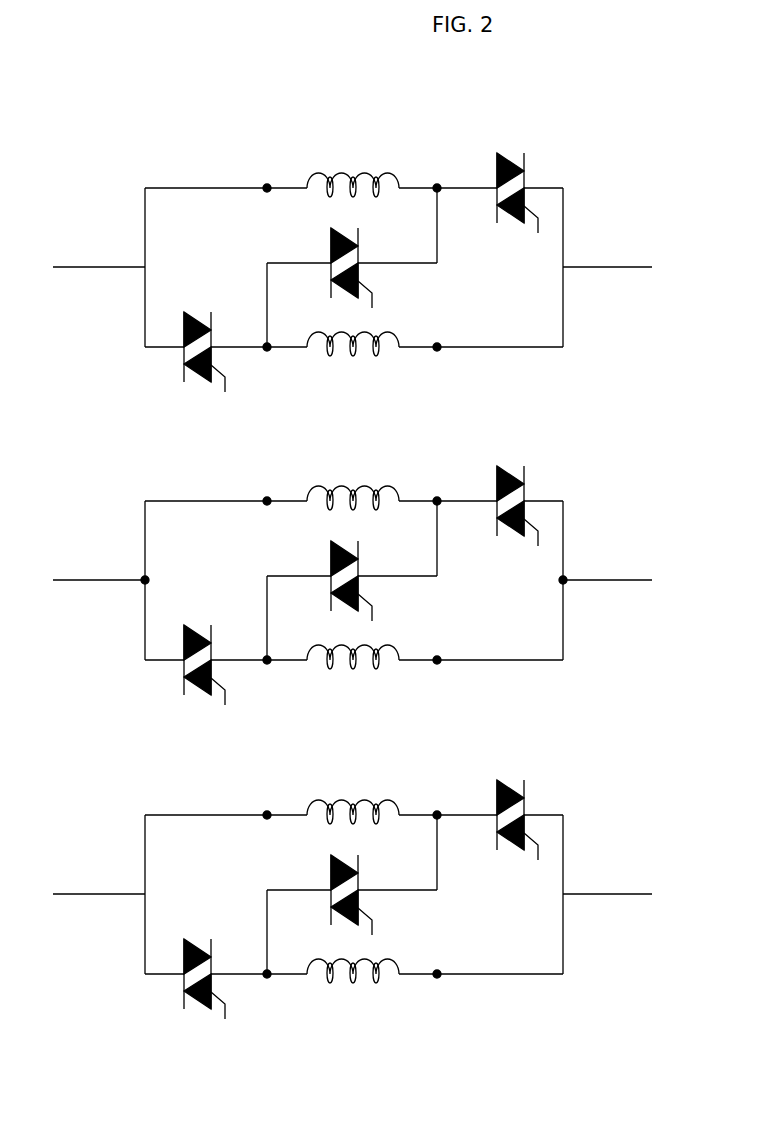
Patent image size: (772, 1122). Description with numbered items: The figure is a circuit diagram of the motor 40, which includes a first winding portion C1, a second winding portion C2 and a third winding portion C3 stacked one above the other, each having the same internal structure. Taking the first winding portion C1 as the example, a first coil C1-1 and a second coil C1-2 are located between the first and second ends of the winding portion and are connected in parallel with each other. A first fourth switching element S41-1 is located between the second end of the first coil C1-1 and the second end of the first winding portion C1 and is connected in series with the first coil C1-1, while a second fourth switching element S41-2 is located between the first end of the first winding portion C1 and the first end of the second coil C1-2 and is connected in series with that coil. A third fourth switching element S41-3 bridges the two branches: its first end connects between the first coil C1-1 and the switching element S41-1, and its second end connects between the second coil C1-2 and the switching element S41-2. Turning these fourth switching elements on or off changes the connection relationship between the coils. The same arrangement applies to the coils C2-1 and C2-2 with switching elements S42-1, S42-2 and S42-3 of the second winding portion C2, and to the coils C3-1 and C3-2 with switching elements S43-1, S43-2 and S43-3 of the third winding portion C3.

The motor 40 is at (93, 112).
The first winding portion C1 is at (593, 233).
The first coil C1-1 is at (340, 172).
The second coil C1-2 is at (375, 355).
The 4-1 switching element S41-1 is at (554, 187).
The 4-2 switching element S41-2 is at (154, 352).
The 4-3 switching element S41-3 is at (395, 268).
The second winding portion C2 is at (378, 578).
The first coil of second winding portion C2-1 is at (336, 459).
The second coil of second winding portion C2-2 is at (373, 696).
The 4-1 switching element of second winding portion S42-1 is at (554, 500).
The 4-2 switching element of second winding portion S42-2 is at (154, 665).
The 4-3 switching element of second winding portion S42-3 is at (395, 581).
The third winding portion C3 is at (378, 893).
The first coil of third winding portion C3-1 is at (336, 774).
The second coil of third winding portion C3-2 is at (373, 1010).
The 4-1 switching element of third winding portion S43-1 is at (554, 814).
The 4-2 switching element of third winding portion S43-2 is at (154, 979).
The 4-3 switching element of third winding portion S43-3 is at (395, 895).